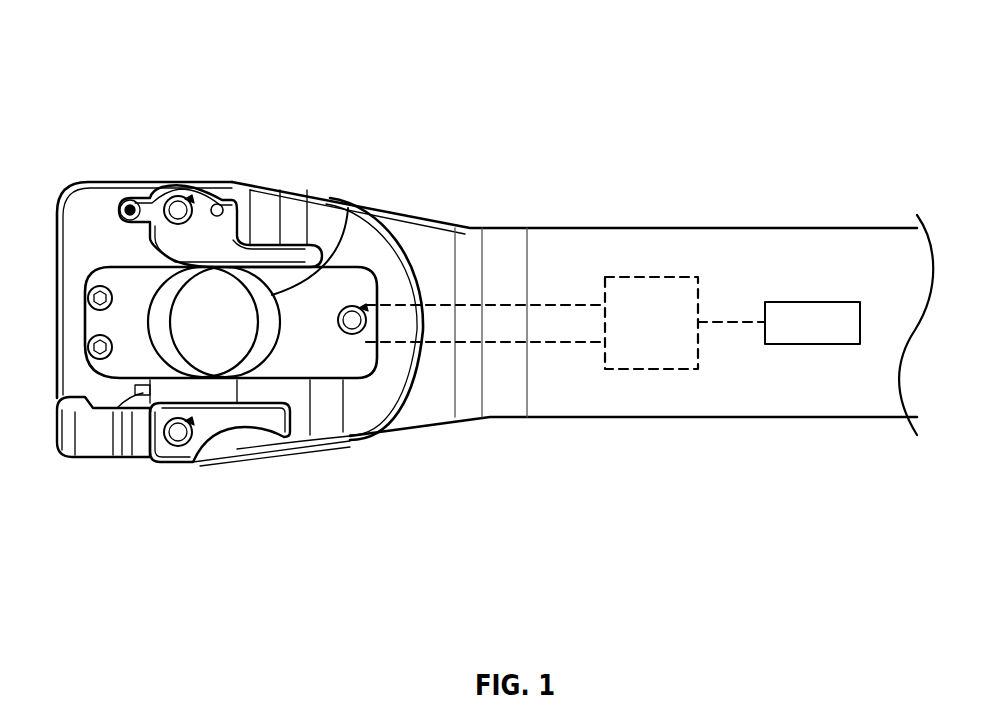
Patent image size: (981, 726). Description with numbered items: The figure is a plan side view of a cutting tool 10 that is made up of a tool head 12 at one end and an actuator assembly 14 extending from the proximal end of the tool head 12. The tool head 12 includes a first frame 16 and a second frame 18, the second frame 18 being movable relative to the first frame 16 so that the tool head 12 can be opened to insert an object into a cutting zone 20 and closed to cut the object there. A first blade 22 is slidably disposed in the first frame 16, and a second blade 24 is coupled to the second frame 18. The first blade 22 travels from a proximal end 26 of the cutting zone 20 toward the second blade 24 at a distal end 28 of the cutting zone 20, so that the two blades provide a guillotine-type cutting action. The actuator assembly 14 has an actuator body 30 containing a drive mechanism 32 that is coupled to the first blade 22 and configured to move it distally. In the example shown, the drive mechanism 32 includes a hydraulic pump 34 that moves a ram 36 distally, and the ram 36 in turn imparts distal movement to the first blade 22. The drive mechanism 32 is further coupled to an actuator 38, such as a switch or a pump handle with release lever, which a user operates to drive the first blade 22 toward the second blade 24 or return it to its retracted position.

The cutting tool 10 is at (723, 68).
The tool head 12 is at (200, 500).
The actuator assembly 14 is at (707, 455).
The first frame 16 is at (383, 228).
The second frame 18 is at (58, 257).
The cutting zone 20 is at (239, 310).
The first blade 22 is at (355, 265).
The second blade 24 is at (173, 290).
The proximal end 26 is at (266, 338).
The distal end 28 is at (186, 345).
The actuator body 30 is at (882, 418).
The drive mechanism 32 is at (596, 364).
The hydraulic pump 34 is at (652, 277).
The ram 36 is at (557, 305).
The actuator 38 is at (813, 302).